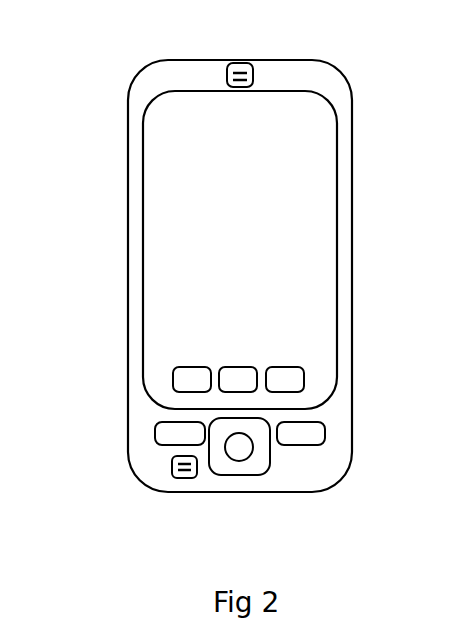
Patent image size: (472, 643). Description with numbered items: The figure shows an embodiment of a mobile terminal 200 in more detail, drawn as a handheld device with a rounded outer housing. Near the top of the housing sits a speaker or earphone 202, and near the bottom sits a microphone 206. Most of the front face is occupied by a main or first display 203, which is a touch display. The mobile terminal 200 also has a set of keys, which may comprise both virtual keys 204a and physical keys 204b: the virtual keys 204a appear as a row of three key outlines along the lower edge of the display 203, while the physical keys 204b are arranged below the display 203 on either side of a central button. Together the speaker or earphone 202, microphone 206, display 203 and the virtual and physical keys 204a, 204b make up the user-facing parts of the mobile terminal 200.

The mobile terminal 200 is at (112, 120).
The speaker or earphone 202 is at (235, 62).
The main or first display 203 is at (338, 177).
The virtual keys 204a is at (156, 380).
The physical keys 204b is at (155, 432).
The microphone 206 is at (180, 480).